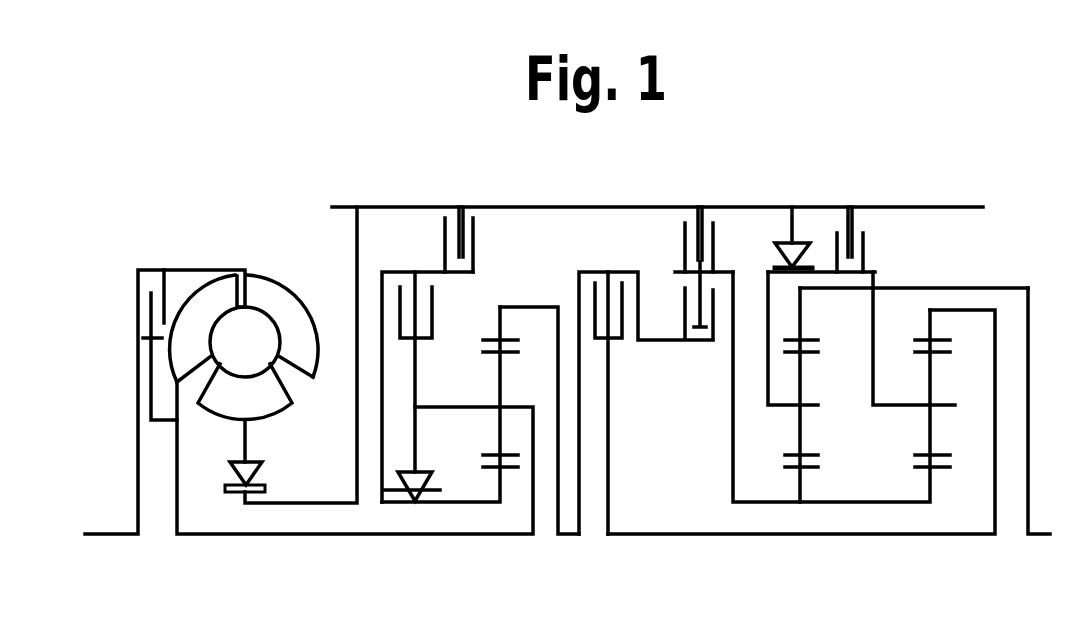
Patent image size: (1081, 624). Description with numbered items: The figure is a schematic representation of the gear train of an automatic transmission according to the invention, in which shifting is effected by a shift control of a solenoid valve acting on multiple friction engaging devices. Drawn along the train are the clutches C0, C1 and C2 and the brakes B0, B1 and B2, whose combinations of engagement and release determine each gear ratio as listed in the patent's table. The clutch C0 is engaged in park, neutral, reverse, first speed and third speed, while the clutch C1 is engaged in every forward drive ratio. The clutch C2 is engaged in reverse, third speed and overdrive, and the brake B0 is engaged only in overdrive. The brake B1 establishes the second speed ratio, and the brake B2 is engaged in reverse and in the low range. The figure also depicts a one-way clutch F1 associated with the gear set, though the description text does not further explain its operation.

The clutch C0 is at (402, 262).
The brake B0 is at (485, 248).
The clutch C1 is at (607, 262).
The brake B1 is at (676, 248).
The clutch C2 is at (722, 290).
The one-way clutch F1 is at (800, 242).
The brake B2 is at (872, 240).